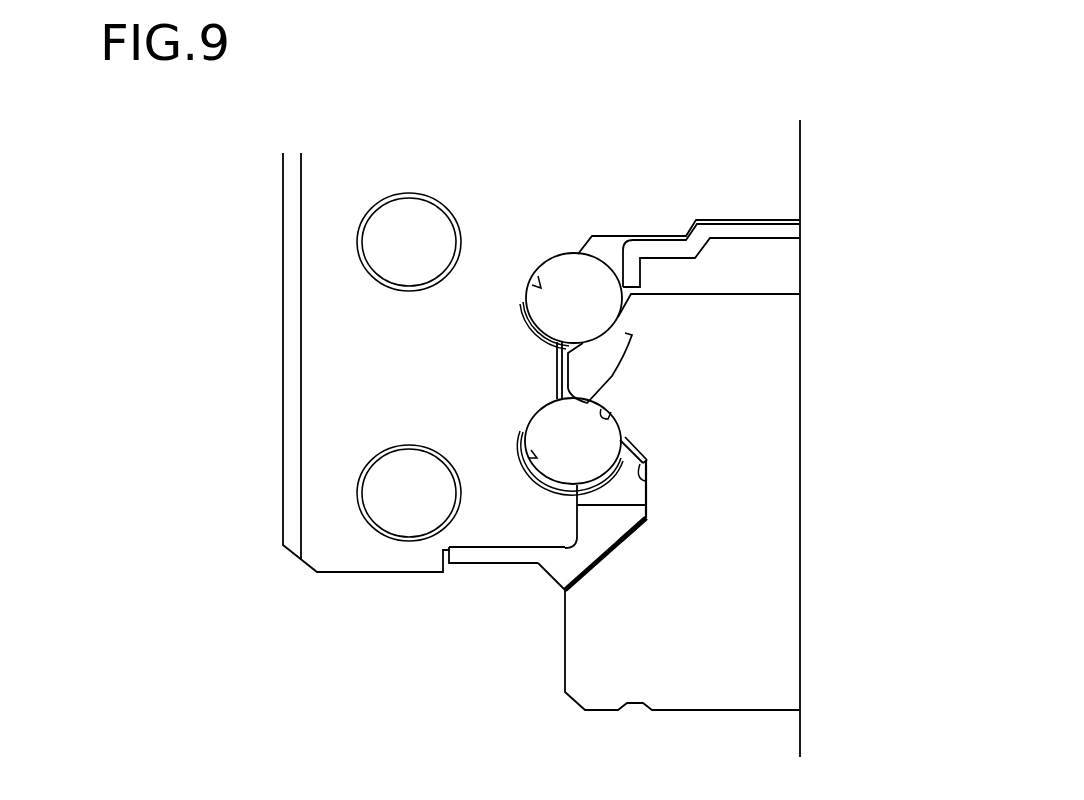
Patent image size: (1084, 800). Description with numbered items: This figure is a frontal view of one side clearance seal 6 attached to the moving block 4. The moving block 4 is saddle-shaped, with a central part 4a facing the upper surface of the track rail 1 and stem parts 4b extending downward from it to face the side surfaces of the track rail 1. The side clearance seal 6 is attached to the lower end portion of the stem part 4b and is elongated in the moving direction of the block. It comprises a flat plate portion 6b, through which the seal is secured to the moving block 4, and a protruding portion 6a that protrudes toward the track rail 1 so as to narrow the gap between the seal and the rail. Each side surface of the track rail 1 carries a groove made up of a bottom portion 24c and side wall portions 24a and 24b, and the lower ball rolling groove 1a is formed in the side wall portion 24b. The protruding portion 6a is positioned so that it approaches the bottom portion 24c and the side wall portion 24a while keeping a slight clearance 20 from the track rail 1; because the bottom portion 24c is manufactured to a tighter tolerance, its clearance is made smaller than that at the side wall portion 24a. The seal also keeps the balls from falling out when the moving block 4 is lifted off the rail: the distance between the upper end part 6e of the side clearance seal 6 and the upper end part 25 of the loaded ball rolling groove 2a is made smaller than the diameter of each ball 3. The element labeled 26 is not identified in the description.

The track rail 1 is at (718, 676).
The lower ball rolling groove 1a is at (567, 433).
The loaded ball rolling groove 2a is at (540, 274).
The ball 3 is at (579, 312).
The moving block 4 is at (341, 308).
The central part 4a is at (787, 148).
The stem part 4b is at (313, 422).
The side clearance seal 6 is at (580, 552).
The protruding portion 6a is at (620, 517).
The flat plate portion 6b is at (462, 552).
The upper end part 6e is at (622, 452).
The clearance 20 is at (605, 560).
The side wall portion 24a is at (637, 527).
The side wall portion 24b is at (628, 453).
The bottom portion 24c is at (637, 457).
The upper end part 25 is at (556, 396).
The bent sheet 26 is at (775, 232).